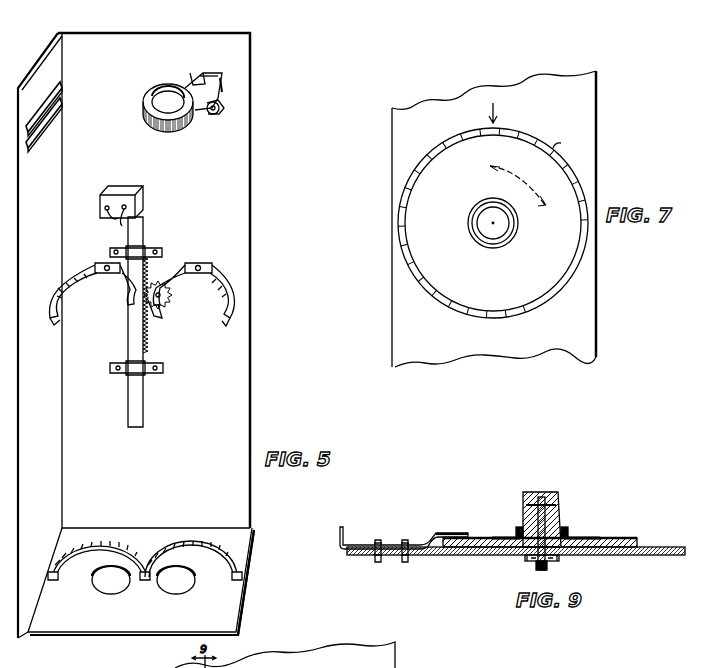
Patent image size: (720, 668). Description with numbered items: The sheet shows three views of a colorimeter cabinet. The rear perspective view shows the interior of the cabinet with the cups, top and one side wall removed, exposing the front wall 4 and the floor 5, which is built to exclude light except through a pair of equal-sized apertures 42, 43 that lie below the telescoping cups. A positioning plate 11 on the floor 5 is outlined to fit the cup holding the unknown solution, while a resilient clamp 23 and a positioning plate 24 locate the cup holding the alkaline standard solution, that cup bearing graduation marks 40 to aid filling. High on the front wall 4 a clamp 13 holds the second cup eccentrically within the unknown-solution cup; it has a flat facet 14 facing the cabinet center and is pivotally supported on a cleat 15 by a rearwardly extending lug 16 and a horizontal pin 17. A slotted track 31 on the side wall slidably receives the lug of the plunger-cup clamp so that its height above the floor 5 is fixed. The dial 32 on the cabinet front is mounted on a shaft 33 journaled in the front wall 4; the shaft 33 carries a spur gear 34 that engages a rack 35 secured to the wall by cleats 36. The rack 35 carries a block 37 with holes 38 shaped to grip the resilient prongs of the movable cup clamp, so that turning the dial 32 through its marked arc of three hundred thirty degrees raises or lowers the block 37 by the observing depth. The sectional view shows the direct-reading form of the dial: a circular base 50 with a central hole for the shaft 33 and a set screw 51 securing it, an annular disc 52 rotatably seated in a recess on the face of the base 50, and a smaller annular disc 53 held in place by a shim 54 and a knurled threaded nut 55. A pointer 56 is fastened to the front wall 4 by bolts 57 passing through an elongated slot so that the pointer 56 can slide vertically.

In FIG. 5, the front wall 4 is at (205, 33).
In FIG. 9, the front wall 4 is at (677, 555).
In FIG. 5, the floor 5 is at (246, 586).
In FIG. 5, the positioning plate 11 is at (210, 544).
In FIG. 5, the clamp 13 is at (180, 87).
In FIG. 5, the flat facet 14 is at (143, 102).
In FIG. 5, the cleat 15 is at (208, 74).
In FIG. 5, the rearwardly extending lug 16 is at (218, 98).
In FIG. 5, the horizontal pin 17 is at (223, 80).
In FIG. 5, the resilient clamp 23 is at (73, 292).
In FIG. 5, the positioning plate 24 is at (117, 544).
In FIG. 5, the slotted track 31 is at (65, 78).
In FIG. 7, the dial 32 is at (558, 292).
In FIG. 5, the shaft 33 is at (160, 308).
In FIG. 9, the shaft 33 is at (540, 570).
In FIG. 5, the spur gear 34 is at (172, 297).
In FIG. 9, the spur gear 34 is at (562, 559).
In FIG. 5, the rack 35 is at (145, 269).
In FIG. 5, the cleats 36 is at (152, 248).
In FIG. 5, the block 37 is at (135, 189).
In FIG. 5, the holes 38 is at (118, 222).
In FIG. 5, the graduation marks 40 is at (226, 310).
In FIG. 5, the aperture 42 is at (175, 589).
In FIG. 5, the aperture 43 is at (110, 589).
In FIG. 9, the circular base 50 is at (645, 538).
In FIG. 9, the set screw 51 is at (523, 504).
In FIG. 9, the annular disc 52 is at (589, 536).
In FIG. 9, the smaller annular disc 53 is at (568, 528).
In FIG. 7, the shim 54 is at (596, 110).
In FIG. 9, the shim 54 is at (516, 534).
In FIG. 9, the knurled threaded nut 55 is at (522, 527).
In FIG. 9, the pointer 56 is at (437, 531).
In FIG. 9, the bolts 57 is at (407, 563).